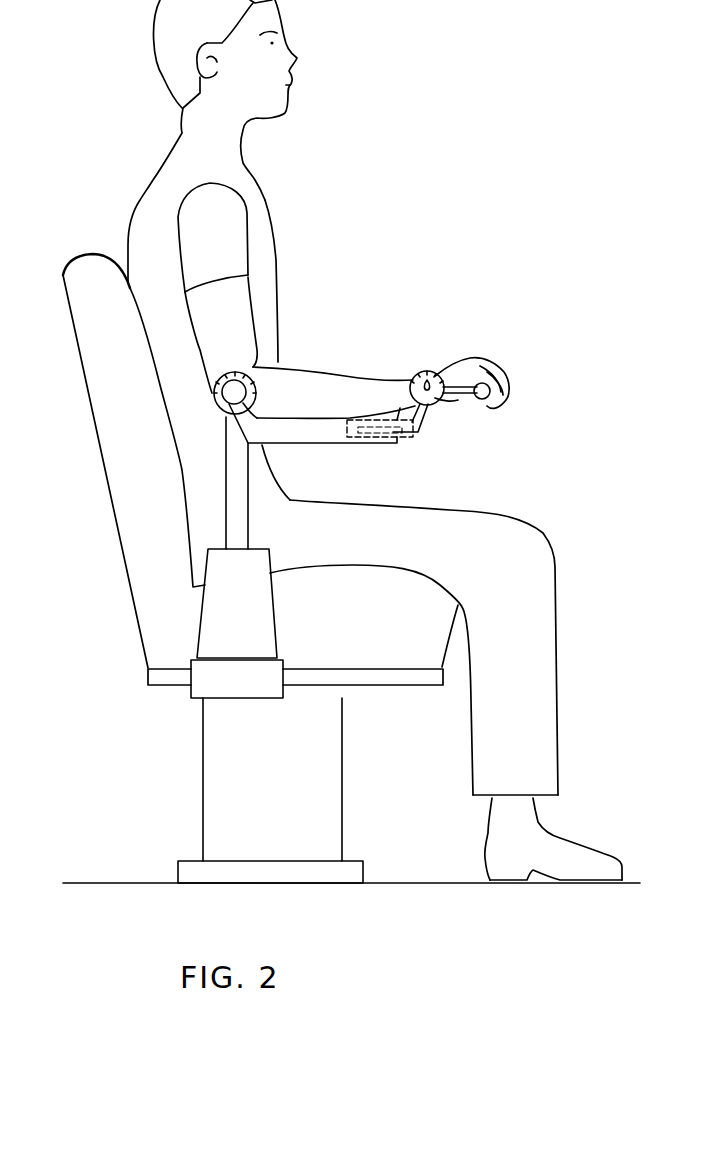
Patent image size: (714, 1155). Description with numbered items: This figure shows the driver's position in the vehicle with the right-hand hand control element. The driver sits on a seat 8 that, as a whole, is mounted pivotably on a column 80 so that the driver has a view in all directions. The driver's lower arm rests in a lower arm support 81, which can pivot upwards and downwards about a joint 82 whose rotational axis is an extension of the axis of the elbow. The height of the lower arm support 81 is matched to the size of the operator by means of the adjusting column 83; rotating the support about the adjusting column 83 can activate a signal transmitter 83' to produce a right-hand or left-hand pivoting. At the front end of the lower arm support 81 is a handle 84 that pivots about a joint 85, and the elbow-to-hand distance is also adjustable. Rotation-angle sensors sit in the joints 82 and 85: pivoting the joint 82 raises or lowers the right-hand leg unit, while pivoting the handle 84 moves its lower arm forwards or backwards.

The seat 8 is at (113, 548).
The column 80 is at (223, 760).
The lower arm support 81 is at (310, 431).
The joint 82 is at (230, 395).
The adjusting column 83 is at (209, 537).
The signal transmitter 83' is at (211, 691).
The handle 84 is at (478, 399).
The joint 85 is at (420, 373).